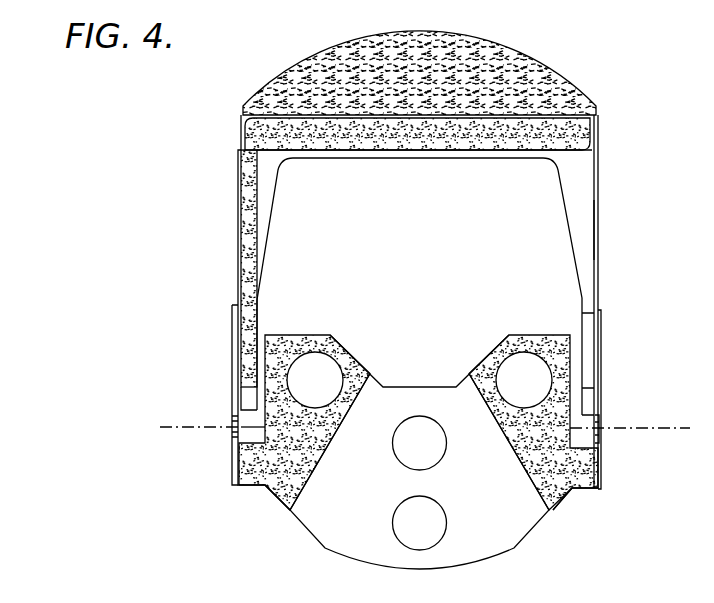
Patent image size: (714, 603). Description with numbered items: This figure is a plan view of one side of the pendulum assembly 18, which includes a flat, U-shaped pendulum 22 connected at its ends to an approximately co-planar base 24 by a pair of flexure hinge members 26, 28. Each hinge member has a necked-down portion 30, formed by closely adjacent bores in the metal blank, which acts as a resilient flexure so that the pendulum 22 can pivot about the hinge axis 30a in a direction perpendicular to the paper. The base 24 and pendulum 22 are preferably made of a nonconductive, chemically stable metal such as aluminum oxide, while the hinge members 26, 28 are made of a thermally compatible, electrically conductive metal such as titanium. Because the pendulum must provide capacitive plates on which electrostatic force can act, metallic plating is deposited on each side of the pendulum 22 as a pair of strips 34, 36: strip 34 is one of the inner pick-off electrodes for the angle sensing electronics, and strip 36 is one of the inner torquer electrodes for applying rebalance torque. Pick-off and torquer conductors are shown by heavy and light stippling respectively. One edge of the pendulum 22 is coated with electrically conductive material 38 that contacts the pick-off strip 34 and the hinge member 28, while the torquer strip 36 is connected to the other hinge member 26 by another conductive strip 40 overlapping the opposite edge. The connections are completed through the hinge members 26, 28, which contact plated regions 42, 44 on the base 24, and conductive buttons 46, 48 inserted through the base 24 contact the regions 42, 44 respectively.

The pendulum assembly 18 is at (201, 168).
The pendulum 22 is at (578, 199).
The base 24 is at (498, 516).
The flexure hinge member 26 is at (233, 364).
The flexure hinge member 28 is at (600, 372).
The necked-down portion 30 is at (600, 438).
The hinge axis 30a is at (198, 398).
The strip 34 is at (553, 98).
The strip 36 is at (482, 142).
The electrically conductive material 38 is at (598, 240).
The conductive strip 40 is at (238, 238).
The plated region 42 is at (272, 493).
The plated region 44 is at (562, 493).
The conductive button 46 is at (333, 392).
The conductive button 48 is at (542, 392).